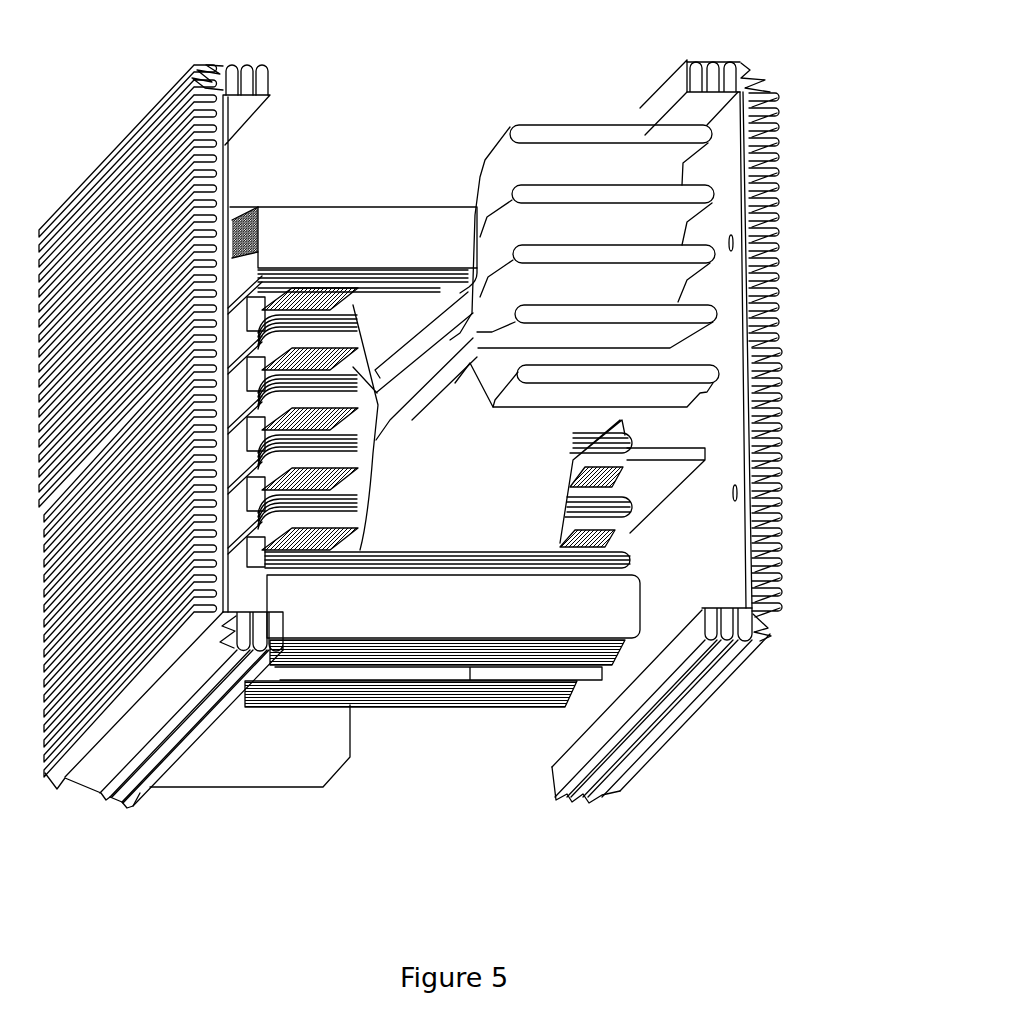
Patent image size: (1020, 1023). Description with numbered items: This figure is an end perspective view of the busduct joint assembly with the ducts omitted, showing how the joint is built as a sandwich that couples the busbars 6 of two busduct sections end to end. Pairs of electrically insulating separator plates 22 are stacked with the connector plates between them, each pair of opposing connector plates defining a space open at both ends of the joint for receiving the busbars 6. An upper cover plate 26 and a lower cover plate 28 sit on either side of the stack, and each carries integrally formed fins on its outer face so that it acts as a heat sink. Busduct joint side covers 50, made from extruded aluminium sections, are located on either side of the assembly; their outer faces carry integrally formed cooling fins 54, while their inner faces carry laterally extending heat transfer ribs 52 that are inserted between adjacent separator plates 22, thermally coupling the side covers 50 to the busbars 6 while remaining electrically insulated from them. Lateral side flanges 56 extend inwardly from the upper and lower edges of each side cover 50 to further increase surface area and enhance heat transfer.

The busbars 6 is at (580, 135).
The separator plates 22 is at (275, 278).
The upper cover plate 26 is at (392, 228).
The lower cover plate 28 is at (493, 620).
The busduct joint side covers 50 is at (83, 773).
The heat transfer ribs 52 is at (257, 547).
The cooling fins 54 is at (785, 300).
The lateral side flanges 56 is at (685, 92).